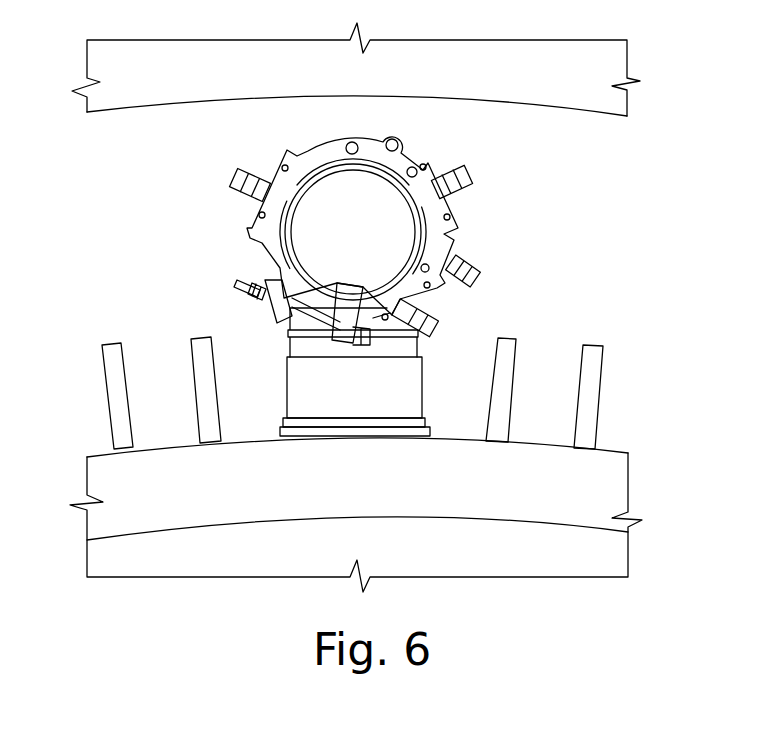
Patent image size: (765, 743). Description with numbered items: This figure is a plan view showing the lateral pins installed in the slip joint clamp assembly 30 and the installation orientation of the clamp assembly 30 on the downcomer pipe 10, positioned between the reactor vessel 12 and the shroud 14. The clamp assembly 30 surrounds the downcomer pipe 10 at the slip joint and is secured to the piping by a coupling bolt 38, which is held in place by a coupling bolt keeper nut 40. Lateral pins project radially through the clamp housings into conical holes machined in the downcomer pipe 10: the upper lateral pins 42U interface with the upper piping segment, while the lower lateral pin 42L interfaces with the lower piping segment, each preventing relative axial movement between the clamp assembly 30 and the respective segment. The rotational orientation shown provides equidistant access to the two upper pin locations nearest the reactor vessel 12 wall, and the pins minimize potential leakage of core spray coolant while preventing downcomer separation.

The downcomer pipe 10 is at (275, 258).
The reactor vessel 12 is at (153, 93).
The shroud 14 is at (540, 460).
The slip joint clamp assembly 30 is at (435, 215).
The coupling bolt 38 is at (315, 317).
The coupling bolt keeper nut 40 is at (240, 295).
The upper lateral pin 42U is at (243, 170).
The lower lateral pin 42L is at (473, 270).